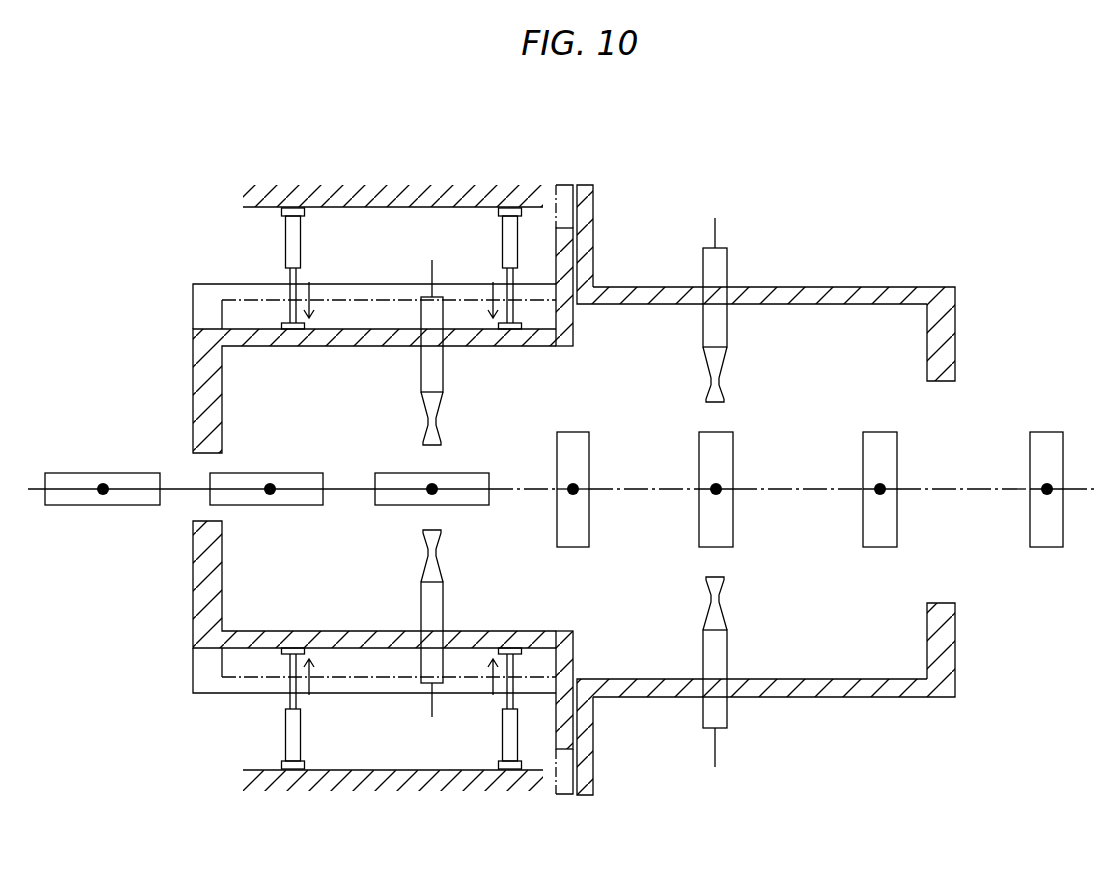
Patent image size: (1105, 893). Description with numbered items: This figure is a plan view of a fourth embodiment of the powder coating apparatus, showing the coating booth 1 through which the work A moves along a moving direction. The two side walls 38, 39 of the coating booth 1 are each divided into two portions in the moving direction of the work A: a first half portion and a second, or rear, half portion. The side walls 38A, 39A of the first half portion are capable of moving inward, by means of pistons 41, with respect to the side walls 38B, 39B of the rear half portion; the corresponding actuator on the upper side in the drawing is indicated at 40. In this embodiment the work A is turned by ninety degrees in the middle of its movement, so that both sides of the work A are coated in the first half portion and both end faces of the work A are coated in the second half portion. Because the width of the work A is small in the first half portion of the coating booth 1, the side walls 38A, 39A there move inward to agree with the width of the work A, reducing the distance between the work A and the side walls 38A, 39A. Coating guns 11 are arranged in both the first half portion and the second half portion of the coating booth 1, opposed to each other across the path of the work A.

The coating booth 1 is at (918, 285).
The coating gun 11 is at (427, 317).
The side wall 38 is at (598, 221).
The side wall of first half portion 38A is at (245, 335).
The side wall of rear half portion 38B is at (828, 291).
The side wall 39 is at (597, 755).
The side wall of first half portion 39A is at (247, 637).
The side wall of rear half portion 39B is at (828, 690).
The upper actuator pin 40 is at (295, 238).
The piston 41 is at (292, 737).
The work A is at (80, 473).